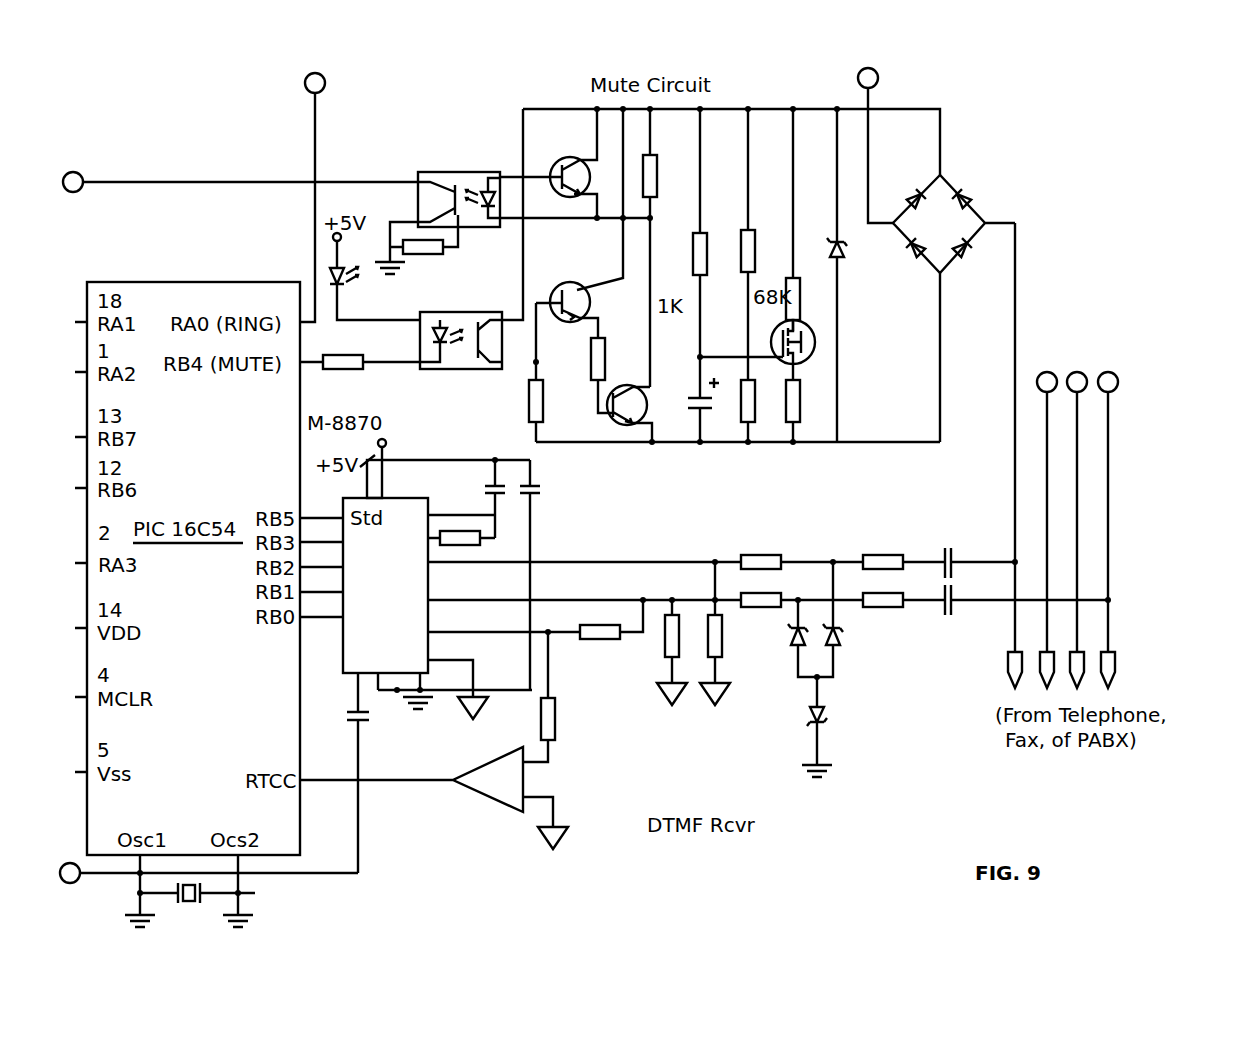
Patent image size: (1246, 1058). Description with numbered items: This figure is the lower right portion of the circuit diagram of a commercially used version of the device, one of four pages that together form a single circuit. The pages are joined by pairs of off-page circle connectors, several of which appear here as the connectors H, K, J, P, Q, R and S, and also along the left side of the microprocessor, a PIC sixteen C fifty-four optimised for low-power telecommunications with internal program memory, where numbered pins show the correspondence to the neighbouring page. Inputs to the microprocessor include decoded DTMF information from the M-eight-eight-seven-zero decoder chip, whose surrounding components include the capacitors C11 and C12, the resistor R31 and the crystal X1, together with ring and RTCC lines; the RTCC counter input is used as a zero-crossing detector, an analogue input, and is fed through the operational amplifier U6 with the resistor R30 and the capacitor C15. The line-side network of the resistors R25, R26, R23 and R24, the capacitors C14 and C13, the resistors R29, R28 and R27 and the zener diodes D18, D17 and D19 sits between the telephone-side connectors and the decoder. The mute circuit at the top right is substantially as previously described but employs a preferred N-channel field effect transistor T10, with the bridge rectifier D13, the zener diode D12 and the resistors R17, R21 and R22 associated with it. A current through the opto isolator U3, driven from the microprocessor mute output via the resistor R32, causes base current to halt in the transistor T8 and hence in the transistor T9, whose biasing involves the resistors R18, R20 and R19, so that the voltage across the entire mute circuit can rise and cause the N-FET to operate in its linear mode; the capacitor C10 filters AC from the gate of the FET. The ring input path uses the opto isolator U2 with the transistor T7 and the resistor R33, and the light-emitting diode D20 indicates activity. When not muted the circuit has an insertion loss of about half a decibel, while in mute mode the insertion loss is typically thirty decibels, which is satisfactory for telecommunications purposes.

The off-page circle connector K is at (322, 92).
The off-page circle connector H is at (70, 192).
The off-page circle connector J is at (68, 883).
The off-page circle connector P is at (865, 145).
The off-page circle connector Q is at (1047, 372).
The off-page circle connector R is at (1077, 372).
The off-page circle connector S is at (1108, 372).
The red LED D20 is at (333, 278).
The resistor 2K7 R32 is at (360, 376).
The opto isolator U3 is at (432, 312).
The optocoupler 4N35 U2 is at (397, 172).
The resistor 100K R33 is at (420, 258).
The transistor MPSA14 T7 is at (553, 165).
The resistor R18 is at (660, 176).
The transistor T8 is at (550, 290).
The resistor R20 is at (608, 345).
The transistor T9 is at (607, 412).
The resistor 270K R19 is at (540, 428).
The capacitor C10 is at (706, 413).
The resistor R17 is at (755, 245).
The resistor 1M R21 is at (745, 430).
The NFET transistor T10 is at (815, 340).
The resistor 4R7 R22 is at (802, 430).
The zener diode 6V2 D12 is at (843, 258).
The bridge rectifier diodes D13..D16 1N5819 D13 is at (970, 195).
The capacitor 0.1uF C11 is at (488, 487).
The capacitor 0.1uF C12 is at (538, 493).
The resistor 270K R31 is at (452, 546).
The resistor 39K R29 is at (585, 625).
The resistor 100K R25 is at (762, 555).
The resistor 100K R26 is at (788, 594).
The resistor 100K R23 is at (903, 567).
The resistor 100K R24 is at (878, 608).
The capacitor 10nF C14 is at (942, 556).
The capacitor 10nF C13 is at (952, 598).
The resistor 100K R28 is at (665, 630).
The resistor 28K R27 is at (700, 655).
The zener diode 12V D18 is at (797, 640).
The zener diode 12V D17 is at (836, 648).
The zener diode 12V D19 is at (823, 722).
The resistor 100K R30 is at (546, 705).
The op-amp LM358 U6 is at (523, 812).
The capacitor 47pF C15 is at (360, 773).
The crystal 3.35799545 MHz X1 is at (291, 891).